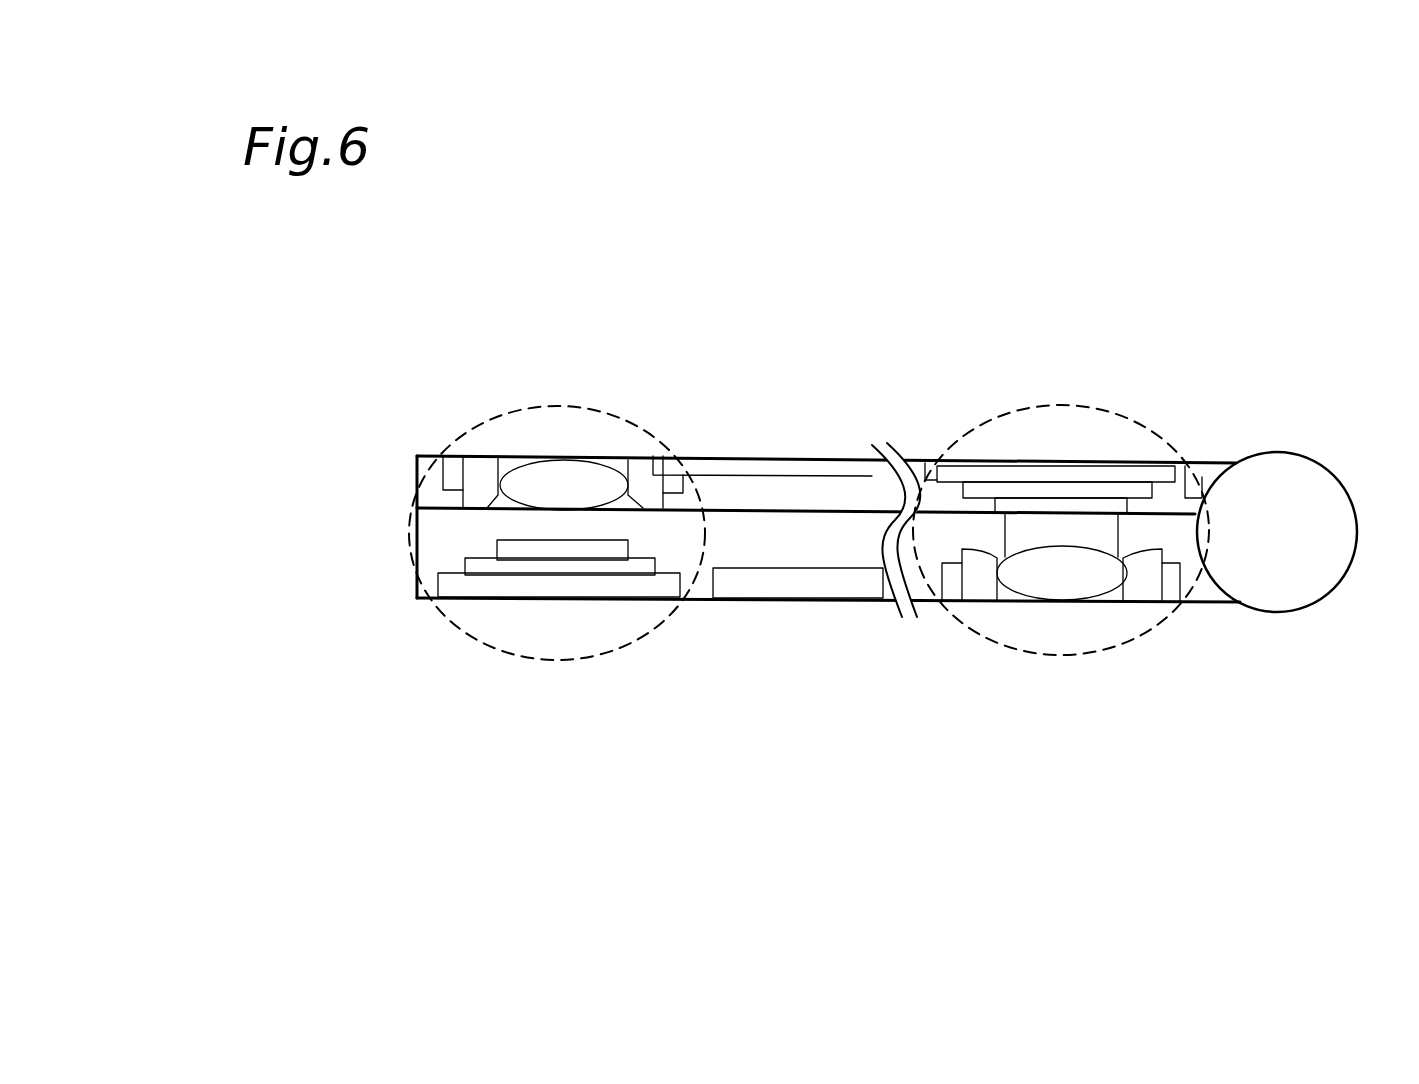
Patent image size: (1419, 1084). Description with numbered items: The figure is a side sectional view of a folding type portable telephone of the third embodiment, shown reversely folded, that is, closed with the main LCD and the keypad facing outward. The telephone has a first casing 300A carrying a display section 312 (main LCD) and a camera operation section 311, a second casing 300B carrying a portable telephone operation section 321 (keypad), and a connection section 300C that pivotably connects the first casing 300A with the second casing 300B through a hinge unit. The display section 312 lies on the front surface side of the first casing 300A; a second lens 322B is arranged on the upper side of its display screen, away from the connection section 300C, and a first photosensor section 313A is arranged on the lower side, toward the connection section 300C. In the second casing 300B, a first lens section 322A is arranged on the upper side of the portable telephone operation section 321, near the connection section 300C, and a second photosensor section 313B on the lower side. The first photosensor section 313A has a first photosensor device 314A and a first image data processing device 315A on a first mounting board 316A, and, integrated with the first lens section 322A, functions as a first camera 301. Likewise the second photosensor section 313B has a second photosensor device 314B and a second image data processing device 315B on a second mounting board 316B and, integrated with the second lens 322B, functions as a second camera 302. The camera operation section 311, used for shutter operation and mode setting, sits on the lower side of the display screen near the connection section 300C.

The first casing 300A is at (555, 359).
The second casing 300B is at (606, 712).
The connection section 300C is at (1287, 563).
The first camera 301 is at (1170, 608).
The second camera 302 is at (457, 446).
The camera operation section 311 is at (1213, 462).
The display section 312 is at (740, 467).
The first photosensor section 313A is at (997, 348).
The second photosensor section 313B is at (561, 712).
The first photosensor device 314A is at (1089, 407).
The second photosensor device 314B is at (633, 650).
The first image data processing device 315A is at (993, 492).
The second image data processing device 315B is at (520, 567).
The first mounting board 316A is at (1032, 473).
The second mounting board 316B is at (544, 582).
The portable telephone operation section 321 is at (830, 585).
The first lens section 322A is at (1077, 610).
The second lens 322B is at (543, 411).